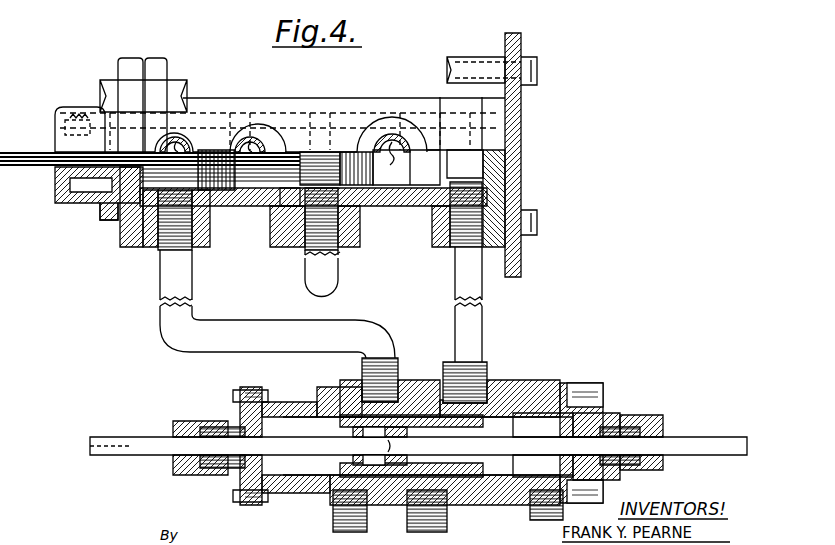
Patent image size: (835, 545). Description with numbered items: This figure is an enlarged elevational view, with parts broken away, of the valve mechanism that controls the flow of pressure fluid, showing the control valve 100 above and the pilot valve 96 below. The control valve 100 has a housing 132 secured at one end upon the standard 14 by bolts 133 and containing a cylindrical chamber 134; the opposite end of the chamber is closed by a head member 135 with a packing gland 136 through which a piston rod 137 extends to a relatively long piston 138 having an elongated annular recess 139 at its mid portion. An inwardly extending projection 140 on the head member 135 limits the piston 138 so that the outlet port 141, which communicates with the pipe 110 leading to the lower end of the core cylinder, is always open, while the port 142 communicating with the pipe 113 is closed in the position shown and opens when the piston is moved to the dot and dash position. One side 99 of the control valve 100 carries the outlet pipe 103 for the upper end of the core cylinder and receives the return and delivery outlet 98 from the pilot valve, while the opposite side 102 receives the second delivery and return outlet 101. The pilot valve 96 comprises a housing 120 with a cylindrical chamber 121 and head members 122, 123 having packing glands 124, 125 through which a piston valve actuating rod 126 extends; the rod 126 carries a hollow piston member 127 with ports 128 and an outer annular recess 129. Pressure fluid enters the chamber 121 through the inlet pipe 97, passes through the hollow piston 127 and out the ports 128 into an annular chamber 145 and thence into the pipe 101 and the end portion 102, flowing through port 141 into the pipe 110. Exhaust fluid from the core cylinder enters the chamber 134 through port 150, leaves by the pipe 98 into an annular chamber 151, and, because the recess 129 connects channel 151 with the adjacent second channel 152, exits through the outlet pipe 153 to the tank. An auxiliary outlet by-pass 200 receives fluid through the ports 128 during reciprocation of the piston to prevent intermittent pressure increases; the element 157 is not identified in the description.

The standard 14 is at (522, 110).
The pilot valve 96 is at (532, 372).
The inlet pipe 97 is at (532, 513).
The return and delivery outlet 98 is at (455, 271).
The side of control valve 99 is at (495, 140).
The control valve 100 is at (346, 88).
The second delivery and return outlet 101 is at (250, 325).
The opposite side of control valve 102 is at (158, 247).
The outlet pipe 103 is at (394, 140).
The outlet pipe 110 is at (178, 140).
The pipe 113 is at (252, 140).
The housing 120 is at (595, 386).
The cylindrical chamber 121 is at (560, 386).
The head member 122 is at (240, 475).
The head member 123 is at (600, 418).
The packing gland 124 is at (203, 419).
The packing gland 125 is at (666, 408).
The piston valve actuating rod 126 is at (133, 448).
The hollow piston member 127 is at (348, 387).
The ports 128 is at (405, 383).
The annular recess 129 is at (500, 382).
The housing 132 is at (429, 97).
The bolts 133 is at (537, 63).
The cylindrical chamber 134 is at (408, 185).
The head member 135 is at (125, 58).
The packing gland 136 is at (72, 214).
The piston rod 137 is at (28, 166).
The piston 138 is at (264, 192).
The annular recess 139 is at (290, 182).
The projection 140 is at (125, 240).
The outlet port 141 is at (176, 70).
The port 142 is at (225, 172).
The annular chamber 145 is at (398, 460).
The port 150 is at (395, 157).
The annular chamber 151 is at (490, 450).
The second channel 152 is at (445, 443).
The outlet pipe 153 is at (447, 513).
The plug 157 is at (305, 271).
The auxiliary outlet by-pass 200 is at (333, 518).